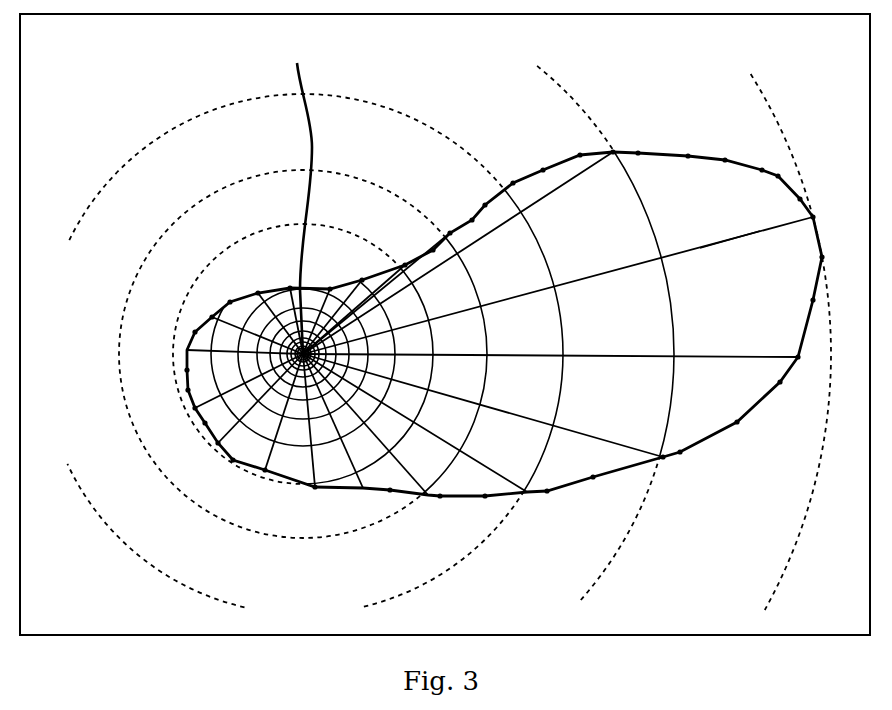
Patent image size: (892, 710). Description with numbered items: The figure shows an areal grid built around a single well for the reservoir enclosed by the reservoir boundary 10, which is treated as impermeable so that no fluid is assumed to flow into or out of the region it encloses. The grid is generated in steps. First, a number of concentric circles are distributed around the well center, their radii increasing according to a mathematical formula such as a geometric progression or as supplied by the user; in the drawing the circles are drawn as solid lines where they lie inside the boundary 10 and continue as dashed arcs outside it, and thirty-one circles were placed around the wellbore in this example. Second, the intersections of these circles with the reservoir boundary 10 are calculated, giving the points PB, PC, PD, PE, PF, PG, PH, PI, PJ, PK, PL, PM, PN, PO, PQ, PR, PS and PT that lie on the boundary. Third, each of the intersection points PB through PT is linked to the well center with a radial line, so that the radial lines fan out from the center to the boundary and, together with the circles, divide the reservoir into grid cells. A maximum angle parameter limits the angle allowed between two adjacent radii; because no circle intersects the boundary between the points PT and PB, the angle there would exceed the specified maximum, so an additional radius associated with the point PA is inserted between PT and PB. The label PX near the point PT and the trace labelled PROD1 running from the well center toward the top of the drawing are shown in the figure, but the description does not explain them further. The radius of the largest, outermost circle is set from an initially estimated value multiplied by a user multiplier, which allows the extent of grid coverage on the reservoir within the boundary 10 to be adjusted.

The reservoir boundary 10 is at (707, 443).
The added-radius point PA is at (567, 367).
The intersection point PB is at (498, 418).
The intersection point PC is at (429, 439).
The intersection point PD is at (380, 439).
The intersection point PE is at (342, 435).
The intersection point PF is at (318, 435).
The intersection point PG is at (275, 426).
The intersection point PH is at (246, 411).
The intersection point PI is at (233, 385).
The intersection point PJ is at (231, 349).
The intersection point PK is at (245, 325).
The intersection point PL is at (268, 312).
The intersection point PM is at (285, 310).
The intersection point PN is at (319, 311).
The intersection point PO is at (336, 305).
The intersection point PQ is at (354, 297).
The intersection point PR is at (376, 289).
The intersection point PS is at (473, 239).
The intersection point PT is at (573, 279).
The reference point PX is at (743, 227).
The product trajectory PROD1 is at (306, 197).